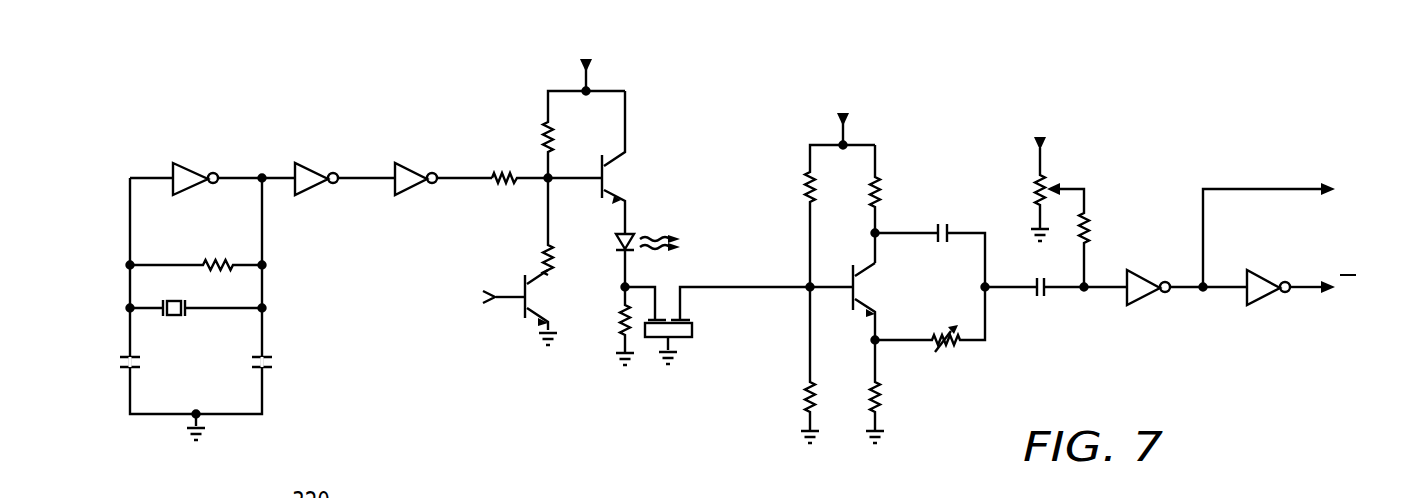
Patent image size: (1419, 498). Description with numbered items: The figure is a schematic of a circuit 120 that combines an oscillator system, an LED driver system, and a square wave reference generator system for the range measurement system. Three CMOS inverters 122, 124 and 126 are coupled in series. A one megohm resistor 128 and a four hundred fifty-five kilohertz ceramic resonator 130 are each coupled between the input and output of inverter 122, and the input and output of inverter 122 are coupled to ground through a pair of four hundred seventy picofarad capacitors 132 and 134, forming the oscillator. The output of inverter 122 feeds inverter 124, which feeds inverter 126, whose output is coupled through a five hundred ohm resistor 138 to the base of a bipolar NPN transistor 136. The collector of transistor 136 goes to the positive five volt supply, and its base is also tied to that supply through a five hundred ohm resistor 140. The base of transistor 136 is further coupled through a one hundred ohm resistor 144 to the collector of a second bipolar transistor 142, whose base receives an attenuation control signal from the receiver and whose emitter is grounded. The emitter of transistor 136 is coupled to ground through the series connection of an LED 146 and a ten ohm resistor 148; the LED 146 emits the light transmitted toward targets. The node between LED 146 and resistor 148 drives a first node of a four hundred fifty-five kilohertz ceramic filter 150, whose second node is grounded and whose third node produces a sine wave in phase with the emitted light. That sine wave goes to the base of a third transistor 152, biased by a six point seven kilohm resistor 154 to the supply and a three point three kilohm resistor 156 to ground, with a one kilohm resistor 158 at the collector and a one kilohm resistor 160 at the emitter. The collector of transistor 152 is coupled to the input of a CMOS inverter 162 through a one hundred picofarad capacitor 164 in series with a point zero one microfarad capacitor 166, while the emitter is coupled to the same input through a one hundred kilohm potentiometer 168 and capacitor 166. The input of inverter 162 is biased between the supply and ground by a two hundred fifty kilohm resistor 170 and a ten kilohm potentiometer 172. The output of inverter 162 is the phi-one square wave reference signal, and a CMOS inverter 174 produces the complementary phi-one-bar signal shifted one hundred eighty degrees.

The circuit 120 is at (286, 69).
The CMOS inverter 122 is at (194, 163).
The CMOS inverter 124 is at (312, 194).
The CMOS inverter 126 is at (410, 194).
The 1 MΩ resistor 128 is at (204, 258).
The 455 kHz ceramic resonator 130 is at (190, 303).
The 470 pF capacitor 132 is at (126, 374).
The 470 pF capacitor 134 is at (266, 374).
The bipolar NPN transistor 136 is at (618, 173).
The 500Ω resistor 138 is at (498, 184).
The 500Ω resistor 140 is at (545, 122).
The second bipolar transistor 142 is at (525, 313).
The 100Ω resistor 144 is at (552, 262).
The LED 146 is at (628, 232).
The 10Ω resistor 148 is at (615, 333).
The 455 kHz ceramic filter 150 is at (655, 342).
The third transistor 152 is at (851, 271).
The 6.7 kΩ resistor 154 is at (806, 178).
The 3.3 kΩ resistor 156 is at (800, 406).
The 1 kΩ resistor 158 is at (880, 177).
The 1 kΩ resistor 160 is at (884, 394).
The CMOS inverter 162 is at (1143, 306).
The 100 pF capacitor 164 is at (947, 246).
The 0.01 µF capacitor 166 is at (1050, 292).
The 100 kΩ potentiometer 168 is at (935, 330).
The 250 kΩ resistor 170 is at (1094, 220).
The 10 kΩ potentiometer 172 is at (1035, 175).
The CMOS inverter 174 is at (1263, 306).